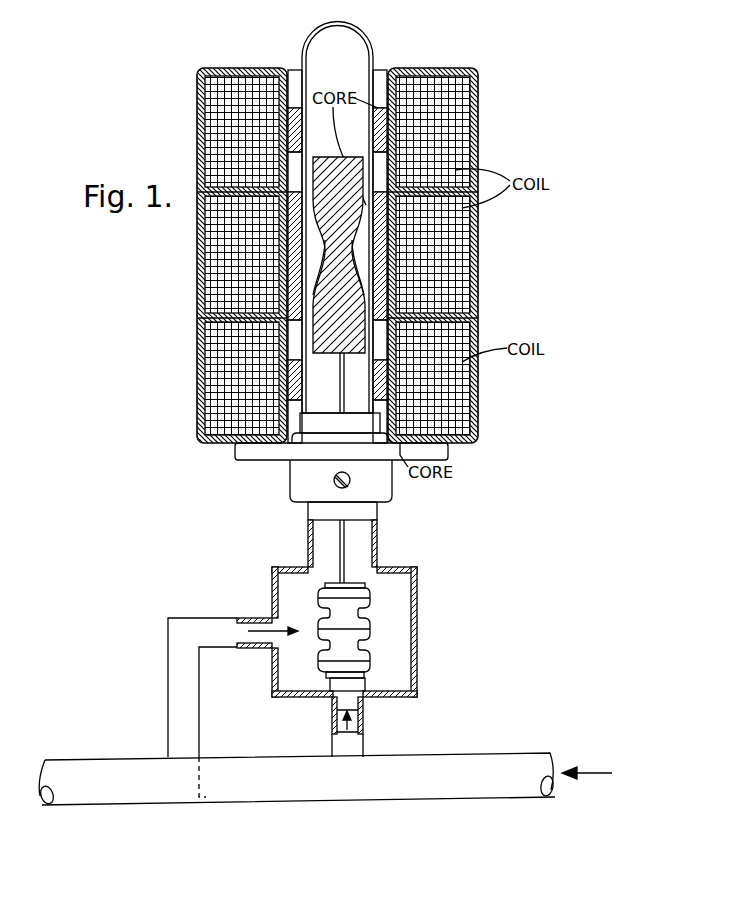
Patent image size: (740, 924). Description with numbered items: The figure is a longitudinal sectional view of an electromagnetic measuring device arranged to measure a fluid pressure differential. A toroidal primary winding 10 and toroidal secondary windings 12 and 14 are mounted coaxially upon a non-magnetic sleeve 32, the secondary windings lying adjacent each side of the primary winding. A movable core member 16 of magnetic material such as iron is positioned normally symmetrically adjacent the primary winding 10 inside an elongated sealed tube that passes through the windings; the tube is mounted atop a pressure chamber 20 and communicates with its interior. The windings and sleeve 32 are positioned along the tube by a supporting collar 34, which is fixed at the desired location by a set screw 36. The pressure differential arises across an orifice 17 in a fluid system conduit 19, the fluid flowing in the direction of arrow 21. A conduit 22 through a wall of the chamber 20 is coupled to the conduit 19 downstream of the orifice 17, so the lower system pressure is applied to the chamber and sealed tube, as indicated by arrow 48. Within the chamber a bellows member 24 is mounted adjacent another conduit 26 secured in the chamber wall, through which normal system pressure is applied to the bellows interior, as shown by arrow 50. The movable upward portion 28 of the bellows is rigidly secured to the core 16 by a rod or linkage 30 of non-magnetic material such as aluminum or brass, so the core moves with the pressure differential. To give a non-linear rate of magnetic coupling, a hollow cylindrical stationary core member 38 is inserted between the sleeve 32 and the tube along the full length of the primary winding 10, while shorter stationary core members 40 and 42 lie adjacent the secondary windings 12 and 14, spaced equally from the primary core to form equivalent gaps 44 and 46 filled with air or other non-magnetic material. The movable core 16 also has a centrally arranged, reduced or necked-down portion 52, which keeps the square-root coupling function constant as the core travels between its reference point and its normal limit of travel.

The primary winding 10 is at (479, 268).
The secondary winding 12 is at (479, 127).
The secondary winding 14 is at (479, 392).
The movable core member 16 is at (320, 152).
The orifice 17 is at (204, 800).
The fluid system conduit 19 is at (358, 800).
The pressure chamber 20 is at (423, 648).
The arrow 21 is at (588, 777).
The conduit 22 is at (200, 690).
The bellows member 24 is at (369, 645).
The conduit 26 is at (364, 722).
The movable upward portion of the bellows 28 is at (365, 585).
The rod or linkage 30 is at (339, 546).
The sleeve 32 is at (377, 108).
The supporting collar 34 is at (292, 477).
The set screw 36 is at (334, 483).
The stationary core member 38 is at (380, 266).
The stationary core member 40 is at (377, 122).
The stationary core member 42 is at (399, 403).
The gap 44 is at (385, 141).
The gap 46 is at (384, 352).
The arrow 48 is at (280, 633).
The arrow 50 is at (334, 728).
The necked-down portion 52 is at (332, 247).